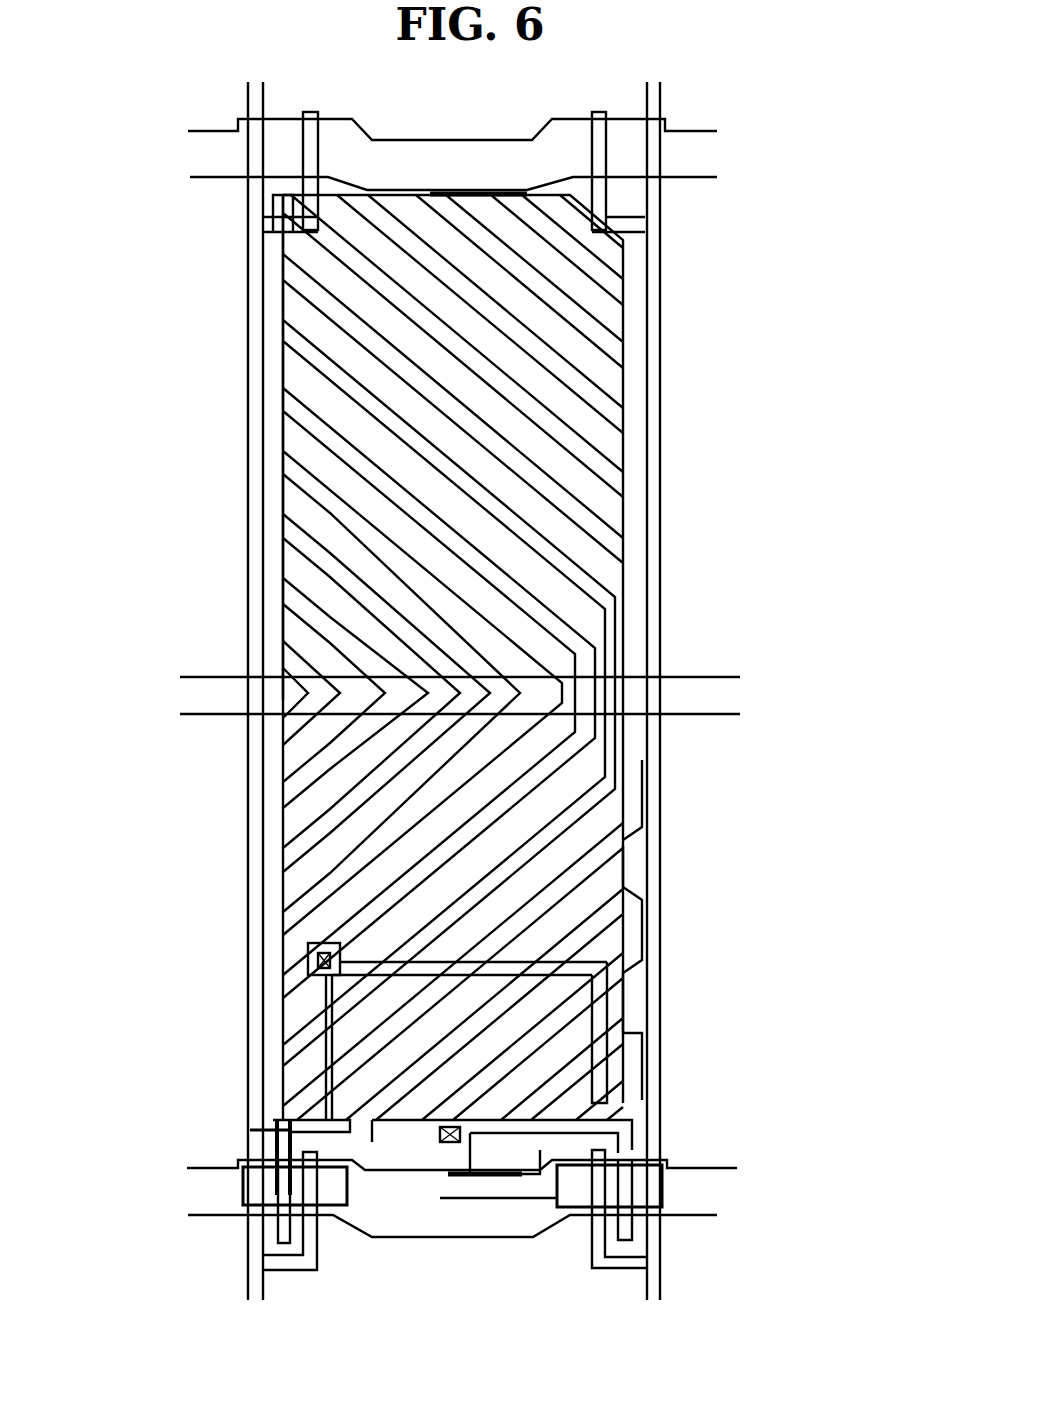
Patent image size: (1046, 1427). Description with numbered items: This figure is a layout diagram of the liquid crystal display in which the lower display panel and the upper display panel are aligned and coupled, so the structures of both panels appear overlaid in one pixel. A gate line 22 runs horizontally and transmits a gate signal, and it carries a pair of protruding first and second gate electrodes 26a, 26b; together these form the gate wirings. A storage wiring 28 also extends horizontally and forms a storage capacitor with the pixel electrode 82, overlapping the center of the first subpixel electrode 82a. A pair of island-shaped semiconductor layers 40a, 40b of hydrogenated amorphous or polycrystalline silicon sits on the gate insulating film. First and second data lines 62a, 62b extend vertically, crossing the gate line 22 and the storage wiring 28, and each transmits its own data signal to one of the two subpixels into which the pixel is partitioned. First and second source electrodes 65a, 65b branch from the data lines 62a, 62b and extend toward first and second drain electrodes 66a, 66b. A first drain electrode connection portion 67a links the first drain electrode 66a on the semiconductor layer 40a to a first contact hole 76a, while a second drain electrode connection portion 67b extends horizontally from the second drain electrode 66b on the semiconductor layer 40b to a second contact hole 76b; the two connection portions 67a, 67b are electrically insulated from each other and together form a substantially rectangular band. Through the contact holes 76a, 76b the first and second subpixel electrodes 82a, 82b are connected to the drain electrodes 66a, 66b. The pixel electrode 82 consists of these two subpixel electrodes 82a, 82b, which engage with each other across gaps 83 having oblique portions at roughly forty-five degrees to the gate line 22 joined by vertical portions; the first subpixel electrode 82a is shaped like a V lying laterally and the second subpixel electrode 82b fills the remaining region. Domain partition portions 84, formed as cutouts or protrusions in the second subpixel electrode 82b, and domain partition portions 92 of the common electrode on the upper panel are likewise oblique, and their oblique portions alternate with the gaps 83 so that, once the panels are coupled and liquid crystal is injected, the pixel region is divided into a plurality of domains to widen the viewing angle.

The gate line 22 is at (395, 1237).
The storage wiring 28 is at (255, 715).
The first gate electrode 26a is at (262, 1152).
The second gate electrode 26b is at (625, 1160).
The semiconductor layer 40a is at (245, 1190).
The semiconductor layer 40b is at (665, 1192).
The first data line 62a is at (263, 598).
The second data line 62b is at (657, 598).
The first source electrode 65a is at (313, 1185).
The second source electrode 65b is at (598, 1250).
The first drain electrode 66a is at (277, 1125).
The second drain electrode 66b is at (632, 1130).
The first drain electrode connection portion 67a is at (573, 1039).
The second drain electrode connection portion 67b is at (540, 1150).
The first contact hole 76a is at (308, 960).
The second contact hole 76b is at (450, 1142).
The pixel electrode 82 is at (349, 657).
The first subpixel electrode 82a is at (283, 425).
The second subpixel electrode 82b is at (283, 300).
The gap 83 is at (540, 548).
The domain partition portion 84 is at (590, 325).
The domain partition portion 92 is at (612, 862).